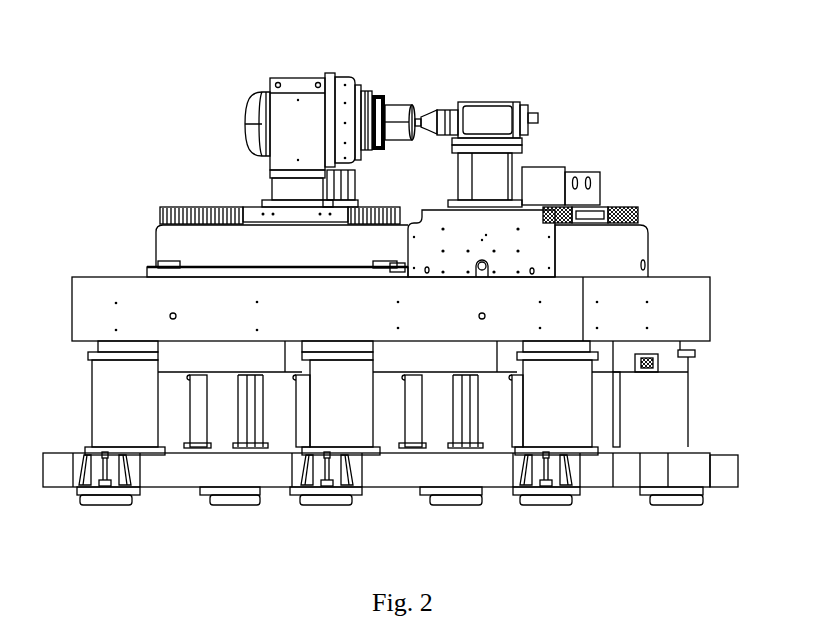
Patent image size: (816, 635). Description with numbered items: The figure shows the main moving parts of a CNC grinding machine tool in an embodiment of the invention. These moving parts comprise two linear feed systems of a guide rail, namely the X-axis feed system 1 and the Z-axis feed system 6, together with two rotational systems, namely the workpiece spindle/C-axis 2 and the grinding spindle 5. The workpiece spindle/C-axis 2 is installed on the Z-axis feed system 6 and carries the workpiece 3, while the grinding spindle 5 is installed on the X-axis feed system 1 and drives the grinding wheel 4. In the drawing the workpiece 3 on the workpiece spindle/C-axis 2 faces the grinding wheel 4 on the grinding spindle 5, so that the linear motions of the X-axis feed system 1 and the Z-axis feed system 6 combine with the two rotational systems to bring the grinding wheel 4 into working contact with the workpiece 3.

The X-axis feed system 1 is at (158, 217).
The workpiece spindle/C-axis 2 is at (257, 104).
The workpiece 3 is at (401, 112).
The grinding wheel 4 is at (423, 118).
The grinding spindle 5 is at (518, 105).
The Z-axis feed system 6 is at (632, 208).